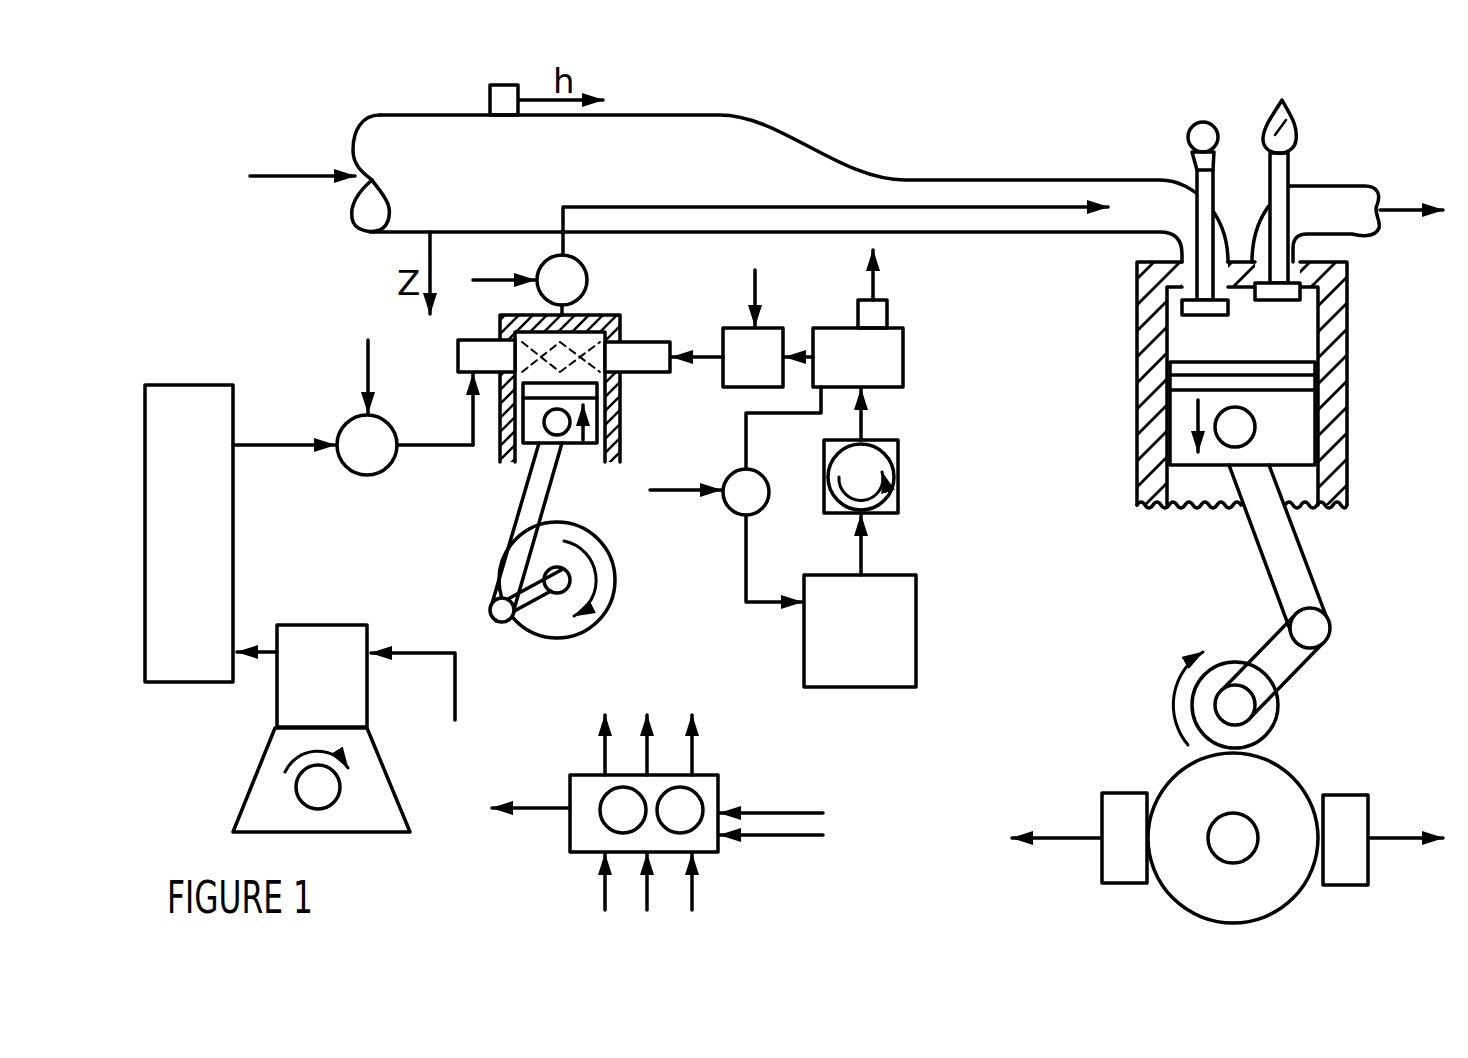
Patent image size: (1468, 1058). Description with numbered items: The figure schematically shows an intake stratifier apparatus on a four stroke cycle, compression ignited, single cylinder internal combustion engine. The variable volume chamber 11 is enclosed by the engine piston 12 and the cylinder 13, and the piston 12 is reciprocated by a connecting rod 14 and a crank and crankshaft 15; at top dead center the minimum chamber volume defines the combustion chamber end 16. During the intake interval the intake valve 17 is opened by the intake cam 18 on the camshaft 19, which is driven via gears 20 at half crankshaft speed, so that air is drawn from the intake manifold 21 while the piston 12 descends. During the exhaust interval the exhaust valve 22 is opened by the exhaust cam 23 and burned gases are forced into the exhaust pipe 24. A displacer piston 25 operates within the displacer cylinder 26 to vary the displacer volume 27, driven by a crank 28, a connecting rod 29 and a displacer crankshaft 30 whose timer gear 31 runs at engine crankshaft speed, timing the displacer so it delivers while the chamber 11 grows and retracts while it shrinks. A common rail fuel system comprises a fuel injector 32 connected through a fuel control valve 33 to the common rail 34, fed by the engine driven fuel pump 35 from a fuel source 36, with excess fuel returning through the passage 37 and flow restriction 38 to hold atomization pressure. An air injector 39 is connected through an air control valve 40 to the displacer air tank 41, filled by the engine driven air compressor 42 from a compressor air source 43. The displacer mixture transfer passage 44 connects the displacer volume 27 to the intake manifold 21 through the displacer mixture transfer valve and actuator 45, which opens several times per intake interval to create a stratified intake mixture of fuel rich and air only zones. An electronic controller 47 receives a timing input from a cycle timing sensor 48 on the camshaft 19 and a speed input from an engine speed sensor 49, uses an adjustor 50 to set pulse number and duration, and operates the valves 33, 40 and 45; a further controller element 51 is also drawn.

The variable volume chamber 11 is at (1282, 332).
The engine piston 12 is at (1297, 413).
The cylinder 13 is at (1325, 305).
The connecting rod 14 is at (1287, 573).
The crank and crankshaft 15 is at (1238, 710).
The combustion chamber end 16 is at (1297, 312).
The intake valve 17 is at (1200, 193).
The intake cam 18 is at (1190, 137).
The camshaft 19 is at (1242, 838).
The gears 20 is at (1280, 792).
The intake manifold 21 is at (860, 185).
The exhaust valve 22 is at (1280, 182).
The exhaust cam 23 is at (1290, 122).
The exhaust pipe 24 is at (1318, 208).
The displacer piston 25 is at (507, 447).
The displacer cylinder 26 is at (622, 415).
The displacer volume 27 is at (597, 322).
The crank 28 is at (530, 635).
The connecting rod 29 is at (538, 490).
The displacer crankshaft 30 is at (553, 580).
The timer gear 31 is at (563, 620).
The fuel injector 32 is at (653, 335).
The fuel control valve 33 is at (762, 337).
The common rail 34 is at (877, 345).
The engine driven fuel pump 35 is at (866, 455).
The fuel source 36 is at (886, 592).
The passage 37 is at (746, 577).
The flow restriction 38 is at (734, 512).
The air injector 39 is at (472, 353).
The air control valve 40 is at (357, 472).
The displacer air tank 41 is at (220, 563).
The engine driven air compressor 42 is at (290, 680).
The compressor air source 43 is at (457, 692).
The displacer mixture transfer passage 44 is at (750, 208).
The displacer mixture transfer valve and actuator 45 is at (575, 288).
The electronic controller 47 is at (585, 825).
The cycle timing sensor 48 is at (1132, 807).
The engine speed sensor 49 is at (1358, 827).
The adjustor 50 is at (617, 803).
The sensor 51 is at (690, 812).